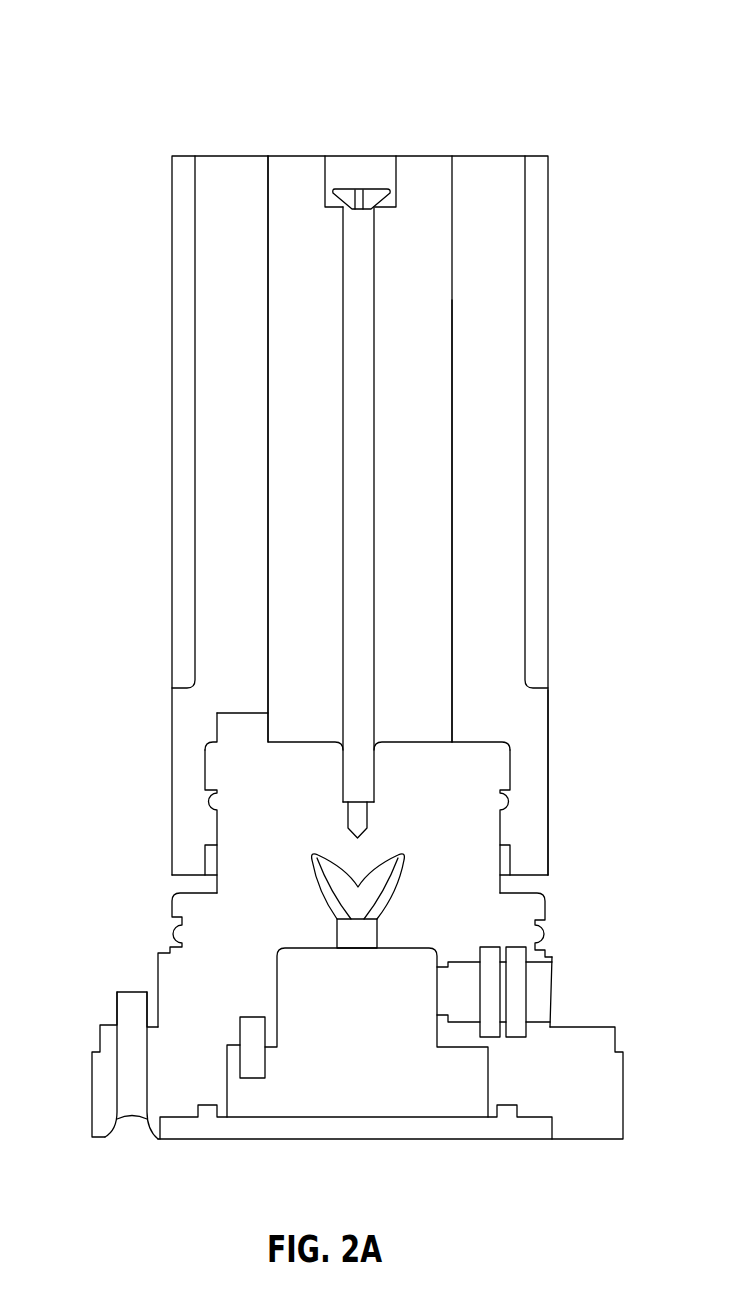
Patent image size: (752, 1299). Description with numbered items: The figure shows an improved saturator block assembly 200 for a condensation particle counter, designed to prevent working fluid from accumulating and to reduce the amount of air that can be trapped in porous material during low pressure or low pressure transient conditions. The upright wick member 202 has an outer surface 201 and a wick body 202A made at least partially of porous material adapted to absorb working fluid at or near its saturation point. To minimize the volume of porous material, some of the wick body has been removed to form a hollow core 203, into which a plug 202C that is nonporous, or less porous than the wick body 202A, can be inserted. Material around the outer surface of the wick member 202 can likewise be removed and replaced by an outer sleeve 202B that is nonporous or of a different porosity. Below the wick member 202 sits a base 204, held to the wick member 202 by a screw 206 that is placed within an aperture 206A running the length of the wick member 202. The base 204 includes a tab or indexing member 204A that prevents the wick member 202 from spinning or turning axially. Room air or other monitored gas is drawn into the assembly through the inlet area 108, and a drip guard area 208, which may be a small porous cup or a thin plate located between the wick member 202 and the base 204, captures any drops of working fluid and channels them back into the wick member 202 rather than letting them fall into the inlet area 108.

The saturator block assembly 200 is at (138, 40).
The outer surface 201 is at (172, 412).
The wick member 202 is at (548, 242).
The wick body 202A is at (518, 710).
The outer sleeve 202B is at (535, 387).
The plug 202C is at (425, 482).
The hollow core 203 is at (296, 175).
The base 204 is at (610, 1084).
The indexing member 204A is at (233, 738).
The screw 206 is at (352, 189).
The aperture 206A is at (382, 173).
The inlet area 108 is at (543, 992).
The drip guard area 208 is at (313, 1105).